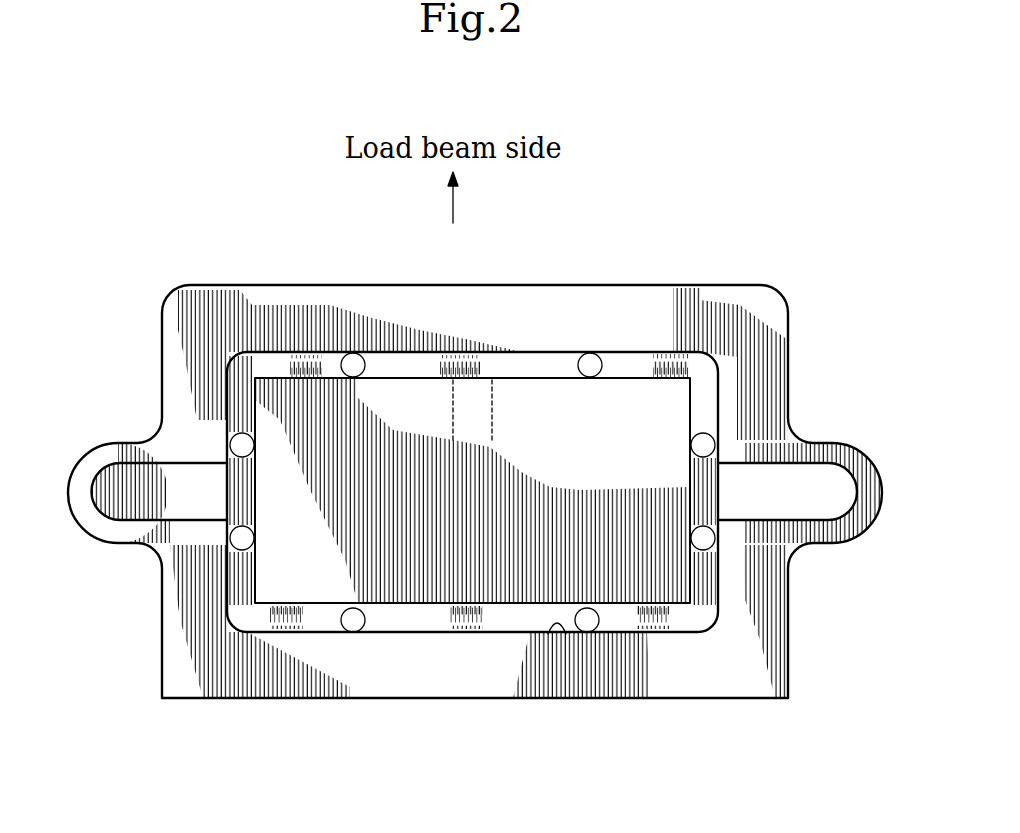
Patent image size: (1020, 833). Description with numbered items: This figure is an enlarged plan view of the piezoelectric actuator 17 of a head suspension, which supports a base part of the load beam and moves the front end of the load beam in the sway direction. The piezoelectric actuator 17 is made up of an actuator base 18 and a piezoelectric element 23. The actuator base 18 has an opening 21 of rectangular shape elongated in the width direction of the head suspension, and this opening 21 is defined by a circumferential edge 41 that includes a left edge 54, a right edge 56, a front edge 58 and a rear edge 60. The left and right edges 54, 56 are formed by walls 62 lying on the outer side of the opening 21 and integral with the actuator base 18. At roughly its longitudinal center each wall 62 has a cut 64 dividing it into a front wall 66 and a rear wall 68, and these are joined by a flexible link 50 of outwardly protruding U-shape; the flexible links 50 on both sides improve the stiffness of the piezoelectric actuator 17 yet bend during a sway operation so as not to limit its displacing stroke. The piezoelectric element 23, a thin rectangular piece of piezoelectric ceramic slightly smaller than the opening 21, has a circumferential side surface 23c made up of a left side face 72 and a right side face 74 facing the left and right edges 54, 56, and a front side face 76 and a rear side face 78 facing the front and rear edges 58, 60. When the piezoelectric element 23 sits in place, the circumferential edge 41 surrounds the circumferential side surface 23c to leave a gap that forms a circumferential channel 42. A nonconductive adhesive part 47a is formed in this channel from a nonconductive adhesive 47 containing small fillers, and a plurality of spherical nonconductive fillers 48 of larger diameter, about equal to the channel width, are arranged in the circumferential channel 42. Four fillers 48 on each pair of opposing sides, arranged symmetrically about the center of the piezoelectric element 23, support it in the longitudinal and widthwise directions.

The piezoelectric actuator 17 is at (713, 147).
The actuator base 18 is at (676, 300).
The opening 21 is at (668, 365).
The piezoelectric element 23 is at (522, 575).
The circumferential side surface 23c is at (396, 640).
The circumferential edge 41 is at (634, 358).
The circumferential channel 42 is at (700, 597).
The nonconductive adhesive 47 is at (492, 484).
The nonconductive adhesive part 47a is at (232, 368).
The nonconductive fillers 48 is at (353, 372).
The flexible link 50 is at (87, 545).
The left edge 54 is at (283, 385).
The right edge 56 is at (704, 382).
The front edge 58 is at (540, 360).
The rear edge 60 is at (558, 640).
The wall 62 is at (160, 417).
The cut 64 is at (183, 500).
The front wall 66 is at (188, 367).
The rear wall 68 is at (180, 588).
The left side face 72 is at (223, 405).
The right side face 74 is at (694, 412).
The front side face 76 is at (420, 378).
The rear side face 78 is at (437, 605).